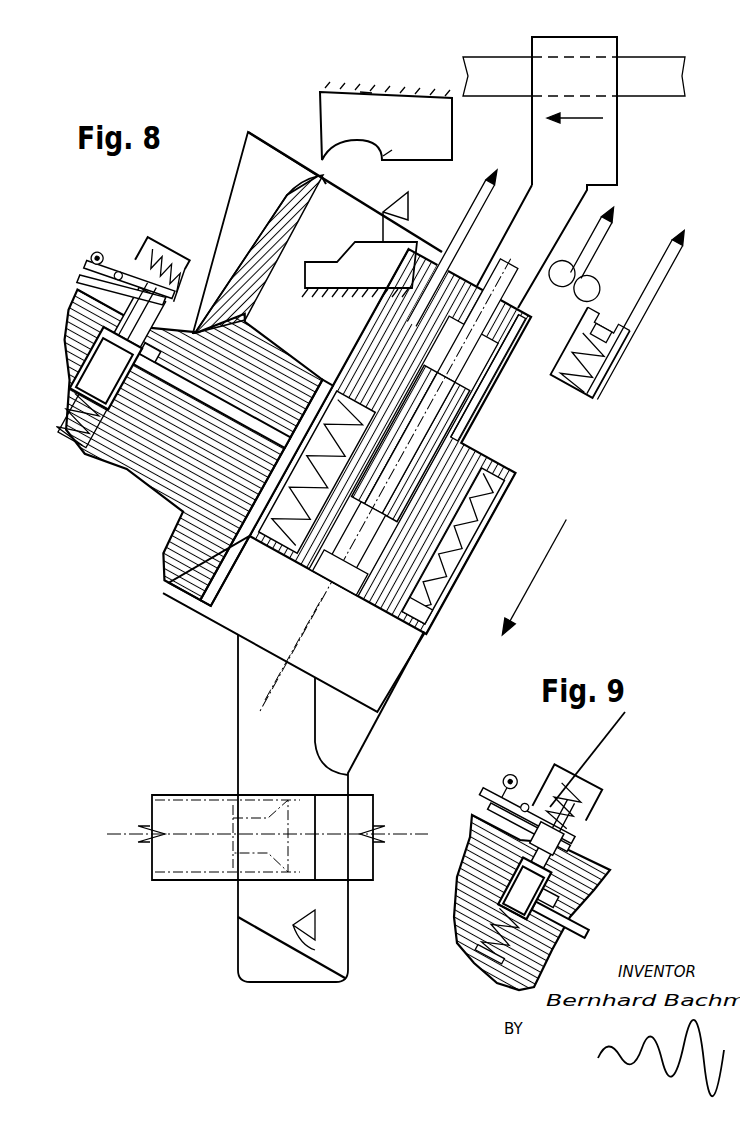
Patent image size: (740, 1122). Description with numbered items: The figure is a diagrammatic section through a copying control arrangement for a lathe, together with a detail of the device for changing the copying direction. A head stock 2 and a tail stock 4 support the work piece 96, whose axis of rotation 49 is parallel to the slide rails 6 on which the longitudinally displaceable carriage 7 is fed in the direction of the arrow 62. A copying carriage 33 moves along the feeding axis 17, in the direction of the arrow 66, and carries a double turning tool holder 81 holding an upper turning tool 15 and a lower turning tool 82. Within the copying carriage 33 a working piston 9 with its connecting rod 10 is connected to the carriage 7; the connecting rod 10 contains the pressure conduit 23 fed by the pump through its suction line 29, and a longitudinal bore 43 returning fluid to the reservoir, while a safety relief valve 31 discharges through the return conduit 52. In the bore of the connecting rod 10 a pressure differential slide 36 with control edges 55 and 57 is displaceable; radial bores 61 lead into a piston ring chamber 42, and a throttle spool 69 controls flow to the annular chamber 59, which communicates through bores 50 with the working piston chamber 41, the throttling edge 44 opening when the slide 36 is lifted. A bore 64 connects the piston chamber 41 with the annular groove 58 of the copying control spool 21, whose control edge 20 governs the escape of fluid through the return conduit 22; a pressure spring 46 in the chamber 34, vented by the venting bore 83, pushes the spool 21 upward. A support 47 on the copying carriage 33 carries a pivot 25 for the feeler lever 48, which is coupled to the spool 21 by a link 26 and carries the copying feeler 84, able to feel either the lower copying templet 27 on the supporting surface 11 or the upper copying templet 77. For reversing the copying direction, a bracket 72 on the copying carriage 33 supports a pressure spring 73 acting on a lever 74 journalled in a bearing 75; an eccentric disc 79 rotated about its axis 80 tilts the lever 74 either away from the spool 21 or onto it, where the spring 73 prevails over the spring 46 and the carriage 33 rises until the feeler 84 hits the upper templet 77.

In FIG. 8, the head stock 2 is at (142, 830).
In FIG. 8, the tail stock 4 is at (382, 826).
In FIG. 8, the slide rails 6 is at (497, 72).
In FIG. 8, the longitudinally displaceable carriage 7 is at (570, 58).
In FIG. 8, the piston 9 is at (425, 604).
In FIG. 8, the connecting rod 10 is at (520, 392).
In FIG. 8, the support 11 is at (345, 300).
In FIG. 8, the copying turning tool 15 is at (352, 746).
In FIG. 8, the feeding axis 17 is at (298, 652).
In FIG. 8, the control edge 20 is at (92, 345).
In FIG. 9, the control edge 20 is at (606, 875).
In FIG. 8, the copying control spool 21 is at (100, 372).
In FIG. 9, the copying control spool 21 is at (522, 912).
In FIG. 8, the return conduit 22 is at (82, 290).
In FIG. 8, the pressure conduit 23 is at (505, 404).
In FIG. 8, the pivot 25 is at (323, 181).
In FIG. 8, the link 26 is at (284, 141).
In FIG. 8, the copying templet 27 is at (312, 279).
In FIG. 8, the suction line 29 is at (616, 222).
In FIG. 8, the safety relief valve 31 is at (606, 374).
In FIG. 8, the copying carriage 33 is at (152, 472).
In FIG. 9, the copying carriage 33 is at (540, 966).
In FIG. 8, the chamber 34 is at (110, 410).
In FIG. 8, the pressure differential slide 36 is at (492, 421).
In FIG. 8, the working piston chamber 41 is at (382, 680).
In FIG. 8, the piston ring chamber 42 is at (492, 497).
In FIG. 8, the longitudinal bore 43 is at (478, 214).
In FIG. 8, the throttling edge 44 is at (300, 566).
In FIG. 8, the pressure spring 46 is at (110, 430).
In FIG. 9, the pressure spring 46 is at (480, 932).
In FIG. 8, the support 47 is at (305, 190).
In FIG. 8, the feeler 48 is at (205, 213).
In FIG. 9, the feeler 48 is at (600, 748).
In FIG. 8, the work piece axis 49 is at (193, 830).
In FIG. 8, the bores 50 is at (326, 572).
In FIG. 8, the return conduit 52 is at (677, 250).
In FIG. 8, the control edge 55 is at (467, 541).
In FIG. 8, the control edge 57 is at (452, 452).
In FIG. 8, the annular groove 58 is at (152, 355).
In FIG. 9, the annular groove 58 is at (562, 890).
In FIG. 8, the annular chamber 59 is at (363, 582).
In FIG. 8, the radial bores 61 is at (353, 378).
In FIG. 8, the arrow 62 is at (580, 120).
In FIG. 8, the conduit 64 is at (196, 400).
In FIG. 9, the conduit 64 is at (582, 912).
In FIG. 8, the arrow 66 is at (532, 586).
In FIG. 8, the throttle spool 69 is at (487, 516).
In FIG. 8, the bracket 72 is at (150, 242).
In FIG. 9, the bracket 72 is at (592, 787).
In FIG. 8, the pressure spring 73 is at (175, 283).
In FIG. 9, the pressure spring 73 is at (582, 812).
In FIG. 8, the lever 74 is at (82, 268).
In FIG. 9, the lever 74 is at (490, 787).
In FIG. 8, the bearing 75 is at (118, 272).
In FIG. 9, the bearing 75 is at (527, 790).
In FIG. 8, the copying templet 77 is at (432, 132).
In FIG. 8, the eccentric disc 79 is at (92, 257).
In FIG. 9, the eccentric disc 79 is at (508, 772).
In FIG. 8, the axis 80 is at (98, 250).
In FIG. 9, the axis 80 is at (503, 782).
In FIG. 8, the double turning tool holder 81 is at (338, 900).
In FIG. 8, the lower turning tool 82 is at (305, 927).
In FIG. 8, the venting bore 83 is at (370, 93).
In FIG. 9, the venting bore 83 is at (487, 965).
In FIG. 8, the copying feeler 84 is at (410, 206).
In FIG. 8, the work piece 96 is at (356, 862).